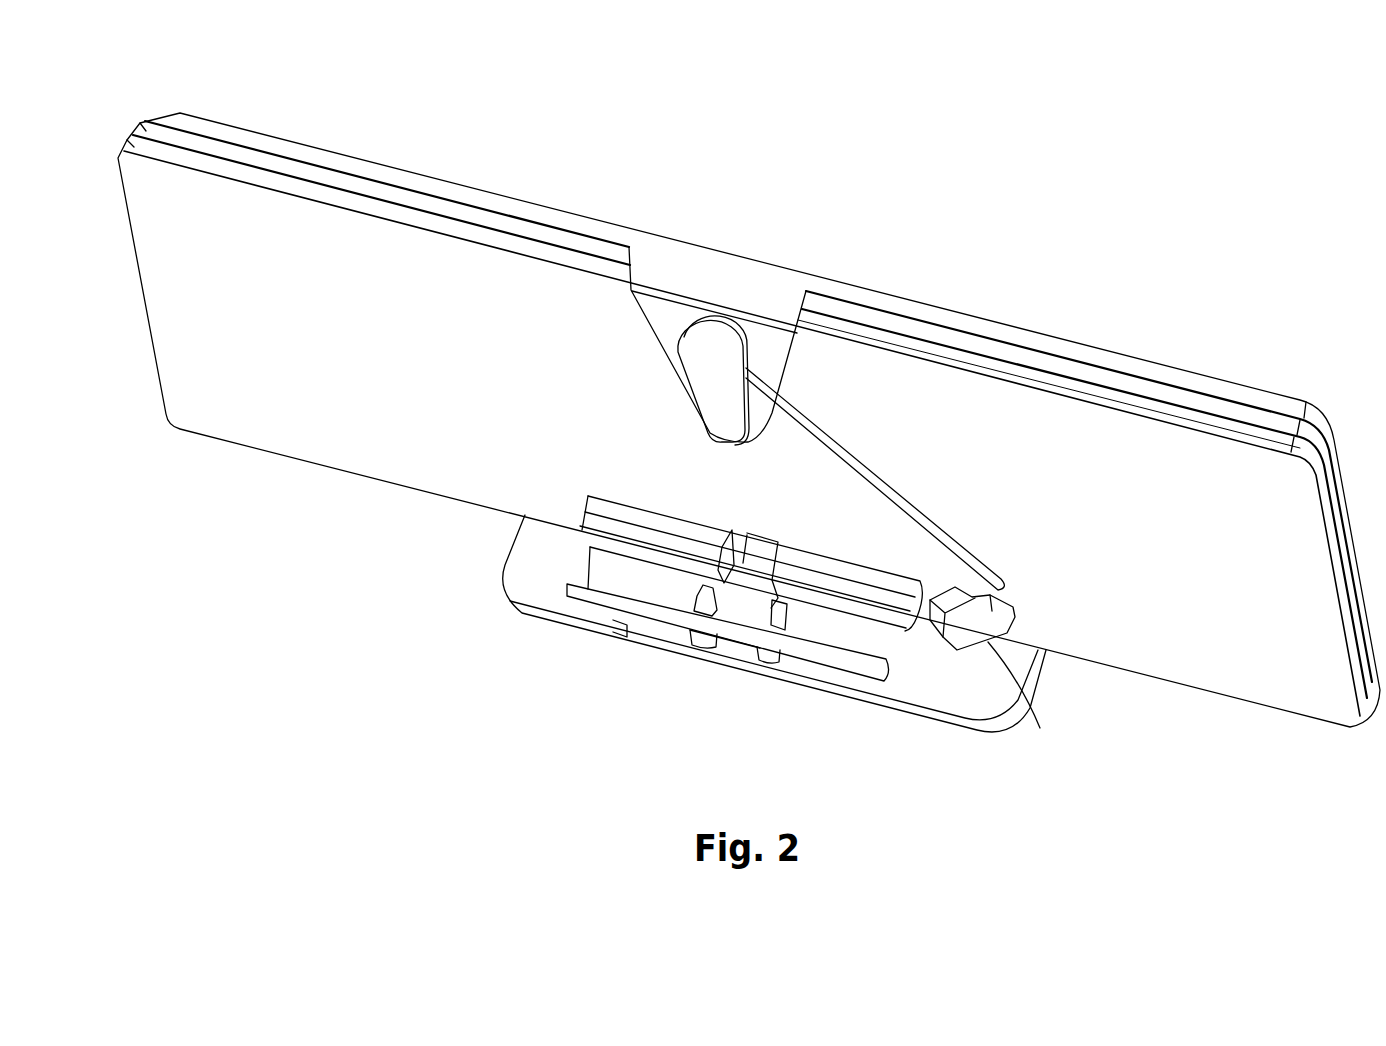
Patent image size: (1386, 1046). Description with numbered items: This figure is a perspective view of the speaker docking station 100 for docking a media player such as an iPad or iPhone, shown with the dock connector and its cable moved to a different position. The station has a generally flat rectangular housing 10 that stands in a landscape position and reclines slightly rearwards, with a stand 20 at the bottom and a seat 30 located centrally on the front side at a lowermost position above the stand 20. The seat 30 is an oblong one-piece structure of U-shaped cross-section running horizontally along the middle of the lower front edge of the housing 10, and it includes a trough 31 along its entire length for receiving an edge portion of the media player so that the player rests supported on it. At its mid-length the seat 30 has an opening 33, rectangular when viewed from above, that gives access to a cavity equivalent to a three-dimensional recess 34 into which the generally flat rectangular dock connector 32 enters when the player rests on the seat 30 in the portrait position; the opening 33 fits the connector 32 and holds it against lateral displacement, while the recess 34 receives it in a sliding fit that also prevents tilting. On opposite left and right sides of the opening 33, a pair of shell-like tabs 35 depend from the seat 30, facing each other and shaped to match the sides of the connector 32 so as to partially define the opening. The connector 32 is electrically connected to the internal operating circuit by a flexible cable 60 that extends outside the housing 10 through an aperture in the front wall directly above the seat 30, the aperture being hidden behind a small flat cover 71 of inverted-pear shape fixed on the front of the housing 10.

The speaker docking station 100 is at (1009, 176).
The housing 10 is at (1183, 354).
The stand 20 is at (527, 553).
The seat 30 is at (620, 635).
The trough 31 is at (880, 638).
The dock connector 32 is at (1043, 680).
The opening 33 is at (733, 610).
The recess 34 is at (735, 650).
The tabs 35 is at (700, 643).
The flexible cable 60 is at (857, 472).
The cover 71 is at (712, 380).